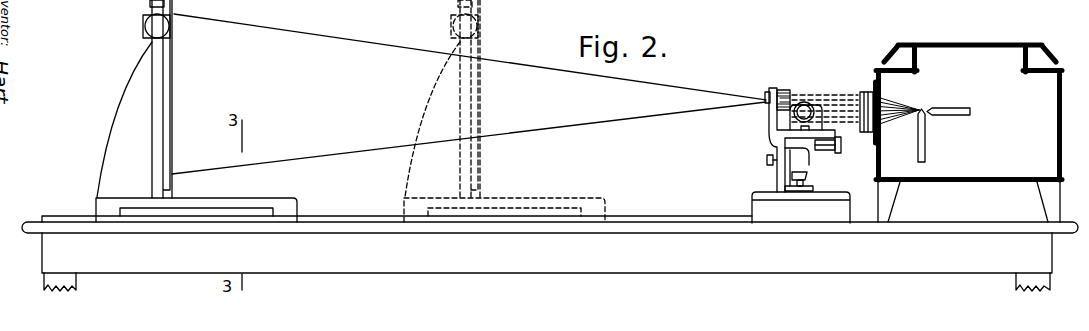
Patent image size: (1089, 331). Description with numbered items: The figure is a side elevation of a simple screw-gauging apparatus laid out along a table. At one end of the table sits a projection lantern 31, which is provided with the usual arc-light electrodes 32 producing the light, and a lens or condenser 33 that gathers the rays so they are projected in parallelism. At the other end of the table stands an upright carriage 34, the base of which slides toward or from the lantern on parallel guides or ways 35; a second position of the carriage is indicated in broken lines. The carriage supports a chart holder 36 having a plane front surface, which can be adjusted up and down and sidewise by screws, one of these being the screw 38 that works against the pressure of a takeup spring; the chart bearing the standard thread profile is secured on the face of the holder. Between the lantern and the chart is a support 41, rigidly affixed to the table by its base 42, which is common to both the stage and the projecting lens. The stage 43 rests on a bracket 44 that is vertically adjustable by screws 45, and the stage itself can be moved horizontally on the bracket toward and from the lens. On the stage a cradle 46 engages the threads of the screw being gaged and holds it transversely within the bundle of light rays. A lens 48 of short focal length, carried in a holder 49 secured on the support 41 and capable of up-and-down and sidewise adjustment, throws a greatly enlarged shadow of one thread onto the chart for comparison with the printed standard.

The projection lantern 31 is at (969, 133).
The arc-light electrodes 32 is at (930, 120).
The lens or condenser 33 is at (860, 100).
The upright carriage 34 is at (152, 122).
The parallel guides or ways 35 is at (324, 217).
The chart holder 36 is at (173, 93).
The screw 38 is at (144, 28).
The support 41 is at (774, 179).
The base 42 is at (792, 215).
The stage 43 is at (813, 137).
The bracket 44 is at (793, 163).
The screws 45 is at (814, 186).
The cradle 46 is at (790, 125).
The lens 48 is at (784, 93).
The holder 49 is at (770, 91).